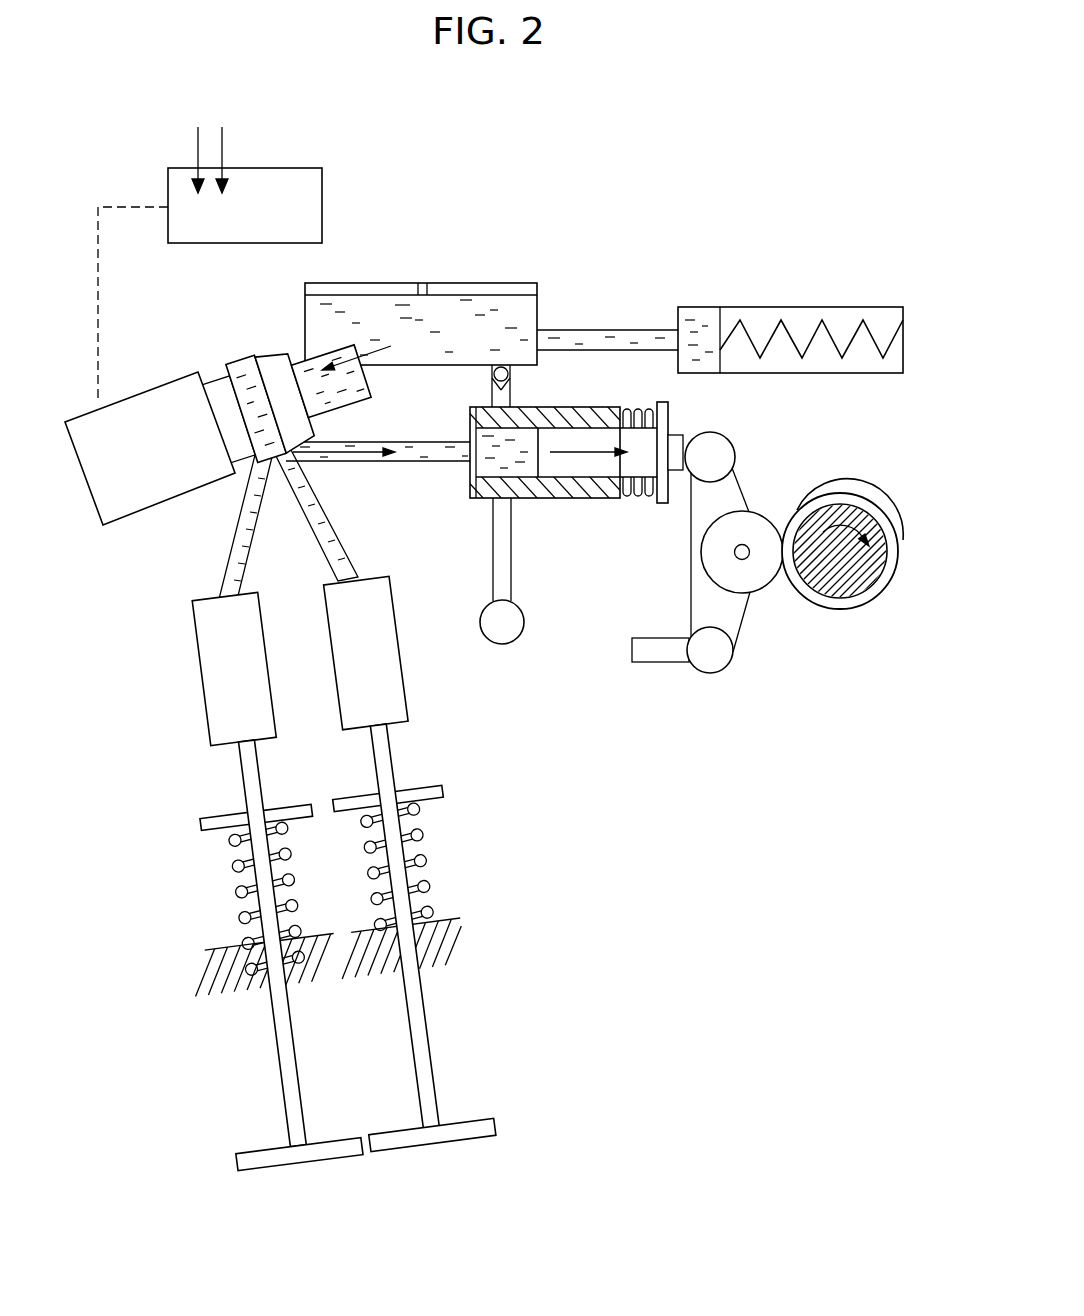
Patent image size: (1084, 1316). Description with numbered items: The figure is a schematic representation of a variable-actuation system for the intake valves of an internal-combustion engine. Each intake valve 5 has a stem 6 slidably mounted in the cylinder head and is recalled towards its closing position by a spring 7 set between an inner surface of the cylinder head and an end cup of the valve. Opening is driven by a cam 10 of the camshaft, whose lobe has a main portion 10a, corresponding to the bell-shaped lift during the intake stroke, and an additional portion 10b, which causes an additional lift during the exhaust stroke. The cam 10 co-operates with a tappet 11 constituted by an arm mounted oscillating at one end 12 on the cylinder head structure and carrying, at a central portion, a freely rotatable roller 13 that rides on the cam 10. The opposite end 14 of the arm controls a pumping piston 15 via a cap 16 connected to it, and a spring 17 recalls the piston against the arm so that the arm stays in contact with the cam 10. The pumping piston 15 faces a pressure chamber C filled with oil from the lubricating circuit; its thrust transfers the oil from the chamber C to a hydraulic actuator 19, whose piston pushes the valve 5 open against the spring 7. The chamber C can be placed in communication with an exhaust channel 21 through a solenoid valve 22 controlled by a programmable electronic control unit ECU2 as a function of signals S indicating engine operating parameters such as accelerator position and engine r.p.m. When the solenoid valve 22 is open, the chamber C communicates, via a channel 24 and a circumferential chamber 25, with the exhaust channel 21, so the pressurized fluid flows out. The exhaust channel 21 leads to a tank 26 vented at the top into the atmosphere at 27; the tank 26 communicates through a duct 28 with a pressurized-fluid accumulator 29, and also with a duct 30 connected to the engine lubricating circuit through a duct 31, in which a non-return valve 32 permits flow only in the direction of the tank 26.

The signals S is at (223, 127).
The programmable electronic control unit ECU2 is at (283, 182).
The solenoid valve 22 is at (155, 382).
The circumferential chamber 25 is at (242, 368).
The exhaust channel 21 is at (357, 395).
The channel 24 is at (325, 460).
The tank 26 is at (485, 325).
The vent 27 is at (432, 288).
The duct 28 is at (600, 325).
The pressurized-fluid accumulator 29 is at (767, 305).
The non-return valve 32 is at (512, 372).
The duct 31 is at (494, 540).
The duct 30 is at (518, 640).
The pressure chamber C is at (474, 470).
The pumping piston 15 is at (563, 498).
The spring 17 is at (635, 502).
The cap 16 is at (662, 402).
The tappet 11 is at (680, 567).
The end of the oscillating arm 14 is at (716, 432).
The roller 13 is at (755, 512).
The end of the oscillating arm 12 is at (714, 663).
The cam 10 is at (808, 603).
The main portion of the cam lobe 10a is at (840, 470).
The additional portion of the cam lobe 10b is at (901, 548).
The hydraulic actuator 19 is at (193, 638).
The spring 7 is at (240, 870).
The stem 6 is at (280, 1055).
The intake valve 5 is at (238, 1165).